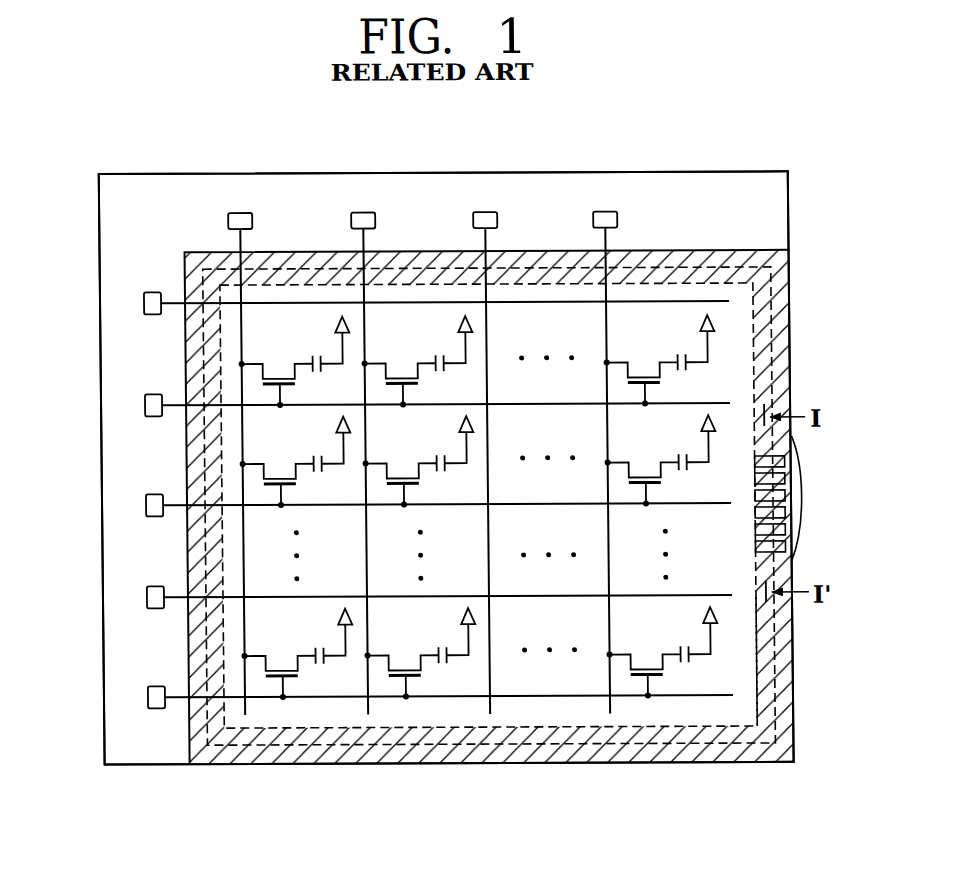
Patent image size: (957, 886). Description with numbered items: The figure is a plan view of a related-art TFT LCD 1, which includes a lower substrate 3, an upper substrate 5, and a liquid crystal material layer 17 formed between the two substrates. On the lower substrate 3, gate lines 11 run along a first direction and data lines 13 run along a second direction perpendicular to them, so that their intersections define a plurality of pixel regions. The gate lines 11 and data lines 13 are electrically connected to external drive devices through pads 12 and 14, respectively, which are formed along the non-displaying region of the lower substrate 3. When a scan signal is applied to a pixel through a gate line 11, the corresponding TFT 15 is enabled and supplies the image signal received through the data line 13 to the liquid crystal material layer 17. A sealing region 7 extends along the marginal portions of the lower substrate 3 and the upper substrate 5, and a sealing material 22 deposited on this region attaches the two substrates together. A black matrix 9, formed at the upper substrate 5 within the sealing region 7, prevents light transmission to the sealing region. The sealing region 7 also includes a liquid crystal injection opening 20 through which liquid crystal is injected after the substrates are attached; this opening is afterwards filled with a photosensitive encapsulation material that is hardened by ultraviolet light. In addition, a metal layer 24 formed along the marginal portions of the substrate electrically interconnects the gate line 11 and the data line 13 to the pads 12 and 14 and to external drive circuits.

The TFT LCD 1 is at (452, 167).
The lower substrate 3 is at (780, 211).
The upper substrate 5 is at (702, 253).
The sealing region 7 is at (752, 638).
The black matrix 9 is at (789, 355).
The gate lines 11 is at (314, 698).
The pads 12 is at (141, 406).
The data lines 13 is at (238, 341).
The pads 14 is at (238, 214).
The TFT 15 is at (232, 478).
The liquid crystal material layer 17 is at (334, 323).
The liquid crystal injection opening 20 is at (808, 466).
The sealing material 22 is at (776, 718).
The metal layer 24 is at (777, 533).